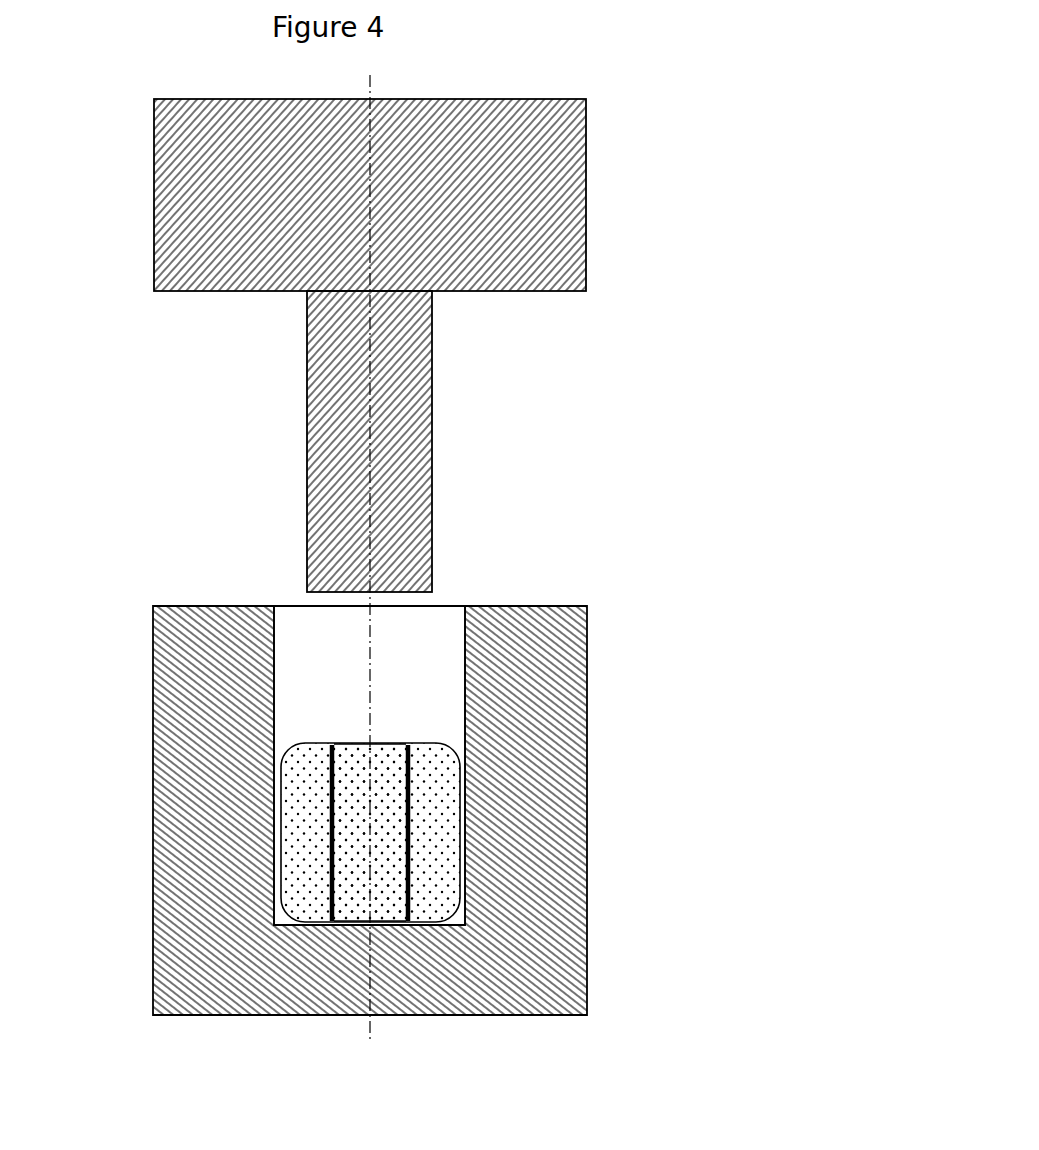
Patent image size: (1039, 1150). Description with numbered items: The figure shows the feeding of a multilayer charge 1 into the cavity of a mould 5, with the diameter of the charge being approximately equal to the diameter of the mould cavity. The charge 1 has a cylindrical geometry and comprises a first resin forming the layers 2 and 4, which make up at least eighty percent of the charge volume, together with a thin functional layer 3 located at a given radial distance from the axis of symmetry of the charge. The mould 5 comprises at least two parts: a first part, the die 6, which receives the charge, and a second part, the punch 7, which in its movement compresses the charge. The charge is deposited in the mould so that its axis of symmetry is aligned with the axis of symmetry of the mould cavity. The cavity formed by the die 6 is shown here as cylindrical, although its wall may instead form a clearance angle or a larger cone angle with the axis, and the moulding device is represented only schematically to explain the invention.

The charge 1 is at (750, 712).
The layer 2 is at (310, 843).
The functional layer 3 is at (330, 827).
The layer 4 is at (360, 797).
The mould 5 is at (705, 400).
The die 6 is at (503, 963).
The punch 7 is at (403, 423).